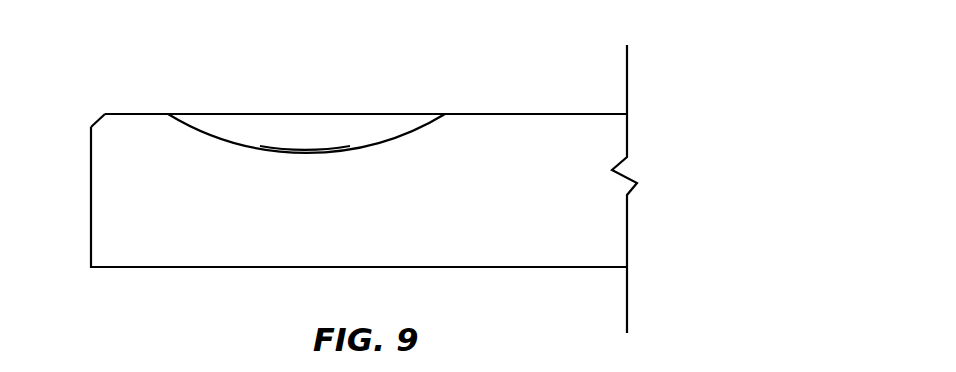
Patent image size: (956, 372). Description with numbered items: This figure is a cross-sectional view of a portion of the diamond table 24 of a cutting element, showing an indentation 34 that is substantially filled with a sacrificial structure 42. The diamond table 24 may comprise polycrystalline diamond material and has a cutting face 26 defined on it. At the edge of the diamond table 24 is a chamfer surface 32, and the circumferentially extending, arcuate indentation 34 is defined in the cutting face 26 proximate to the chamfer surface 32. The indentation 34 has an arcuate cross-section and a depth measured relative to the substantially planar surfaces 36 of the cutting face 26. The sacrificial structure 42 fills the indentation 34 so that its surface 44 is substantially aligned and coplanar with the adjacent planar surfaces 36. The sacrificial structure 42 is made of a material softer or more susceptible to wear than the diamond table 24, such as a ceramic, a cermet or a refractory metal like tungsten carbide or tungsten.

The diamond table 24 is at (517, 198).
The cutting face 26 is at (566, 76).
The chamfer surface 32 is at (100, 113).
The indentation 34 is at (252, 143).
The substantially planar surfaces 36 is at (130, 113).
The sacrificial structure 42 is at (297, 128).
The surface of the sacrificial structure 44 is at (373, 113).